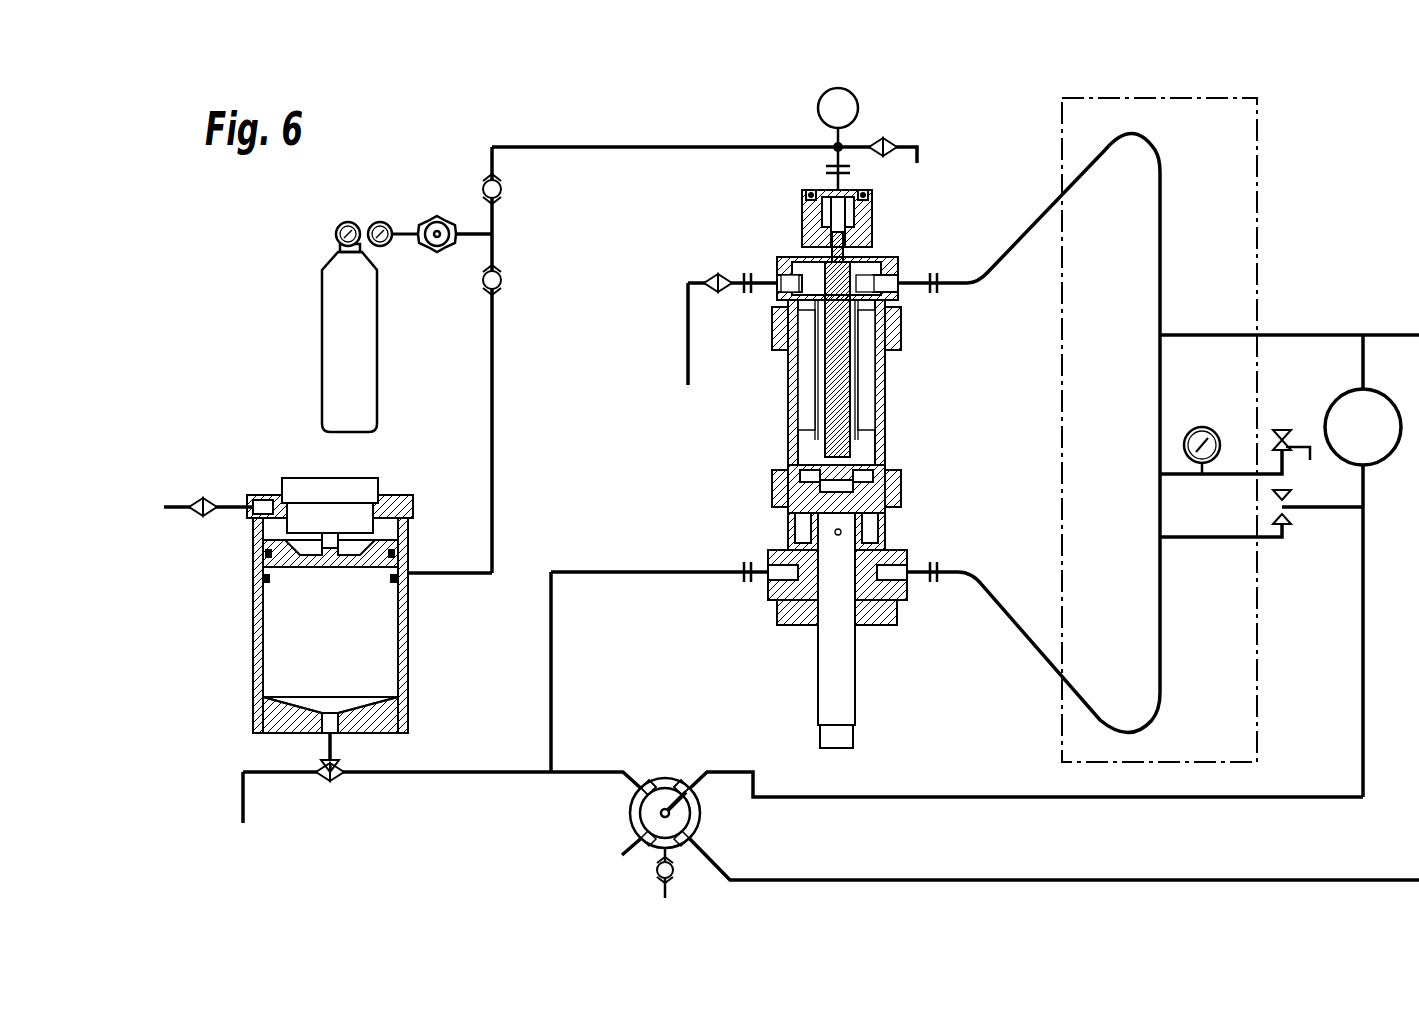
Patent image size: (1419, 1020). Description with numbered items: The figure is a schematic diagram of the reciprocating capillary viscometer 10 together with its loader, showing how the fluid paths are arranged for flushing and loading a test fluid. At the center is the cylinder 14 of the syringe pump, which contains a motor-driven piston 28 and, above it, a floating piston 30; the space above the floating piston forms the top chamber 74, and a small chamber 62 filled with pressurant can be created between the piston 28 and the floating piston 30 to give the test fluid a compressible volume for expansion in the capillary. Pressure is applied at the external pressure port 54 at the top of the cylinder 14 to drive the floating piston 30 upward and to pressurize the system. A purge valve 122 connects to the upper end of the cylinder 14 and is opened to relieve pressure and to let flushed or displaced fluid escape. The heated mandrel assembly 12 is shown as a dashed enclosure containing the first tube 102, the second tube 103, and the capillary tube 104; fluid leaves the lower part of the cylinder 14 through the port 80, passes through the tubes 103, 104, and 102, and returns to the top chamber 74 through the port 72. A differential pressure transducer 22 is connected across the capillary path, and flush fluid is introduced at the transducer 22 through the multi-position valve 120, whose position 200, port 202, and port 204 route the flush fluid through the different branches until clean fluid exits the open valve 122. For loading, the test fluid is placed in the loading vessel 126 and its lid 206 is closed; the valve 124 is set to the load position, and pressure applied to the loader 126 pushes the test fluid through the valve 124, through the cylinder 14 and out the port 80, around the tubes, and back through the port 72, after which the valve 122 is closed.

The reciprocating capillary viscometer 10 is at (486, 129).
The heated mandrel assembly 12 is at (1258, 632).
The cylinder 14 is at (790, 383).
The differential pressure transducer 22 is at (1340, 395).
The piston 28 is at (888, 488).
The floating piston 30 is at (873, 458).
The external pressure port 54 is at (827, 186).
The small chamber 62 is at (800, 490).
The port 72 is at (898, 283).
The top chamber 74 is at (866, 367).
The port 80 is at (900, 562).
The first tube 102 is at (1160, 235).
The second tube 103 is at (1020, 625).
The capillary tube 104 is at (1158, 396).
The valve 120 is at (703, 820).
The purge valve 122 is at (718, 280).
The valve 124 is at (333, 783).
The loading vessel 126 is at (412, 650).
The valve position 200 is at (690, 838).
The valve port 202 is at (686, 790).
The valve port 204 is at (645, 790).
The lid 206 is at (380, 495).